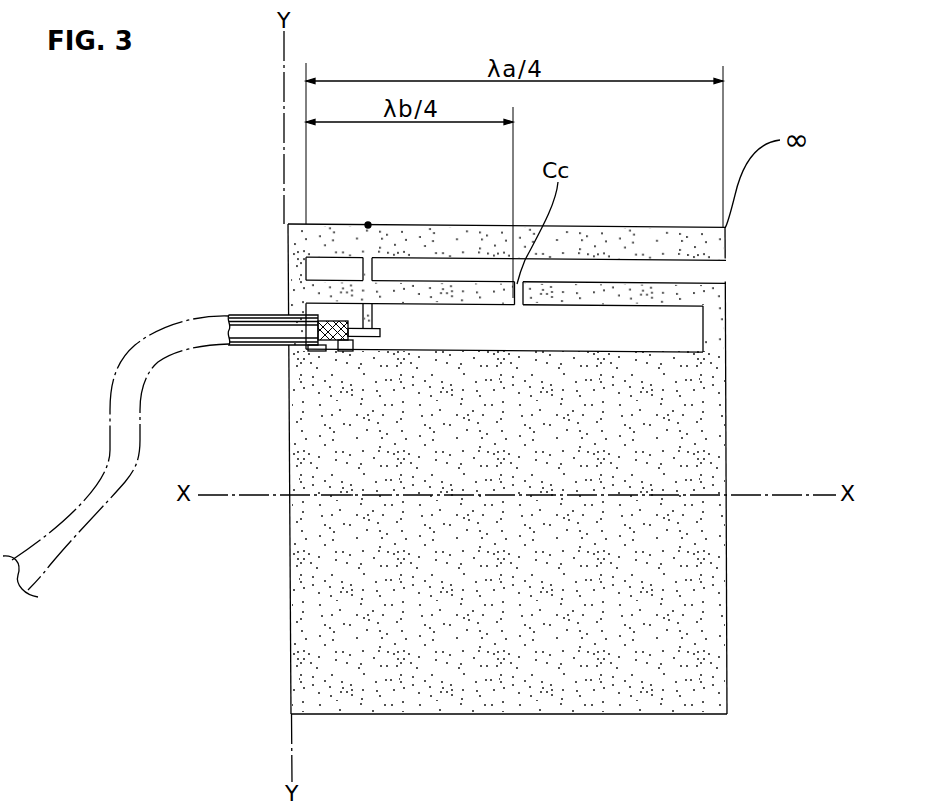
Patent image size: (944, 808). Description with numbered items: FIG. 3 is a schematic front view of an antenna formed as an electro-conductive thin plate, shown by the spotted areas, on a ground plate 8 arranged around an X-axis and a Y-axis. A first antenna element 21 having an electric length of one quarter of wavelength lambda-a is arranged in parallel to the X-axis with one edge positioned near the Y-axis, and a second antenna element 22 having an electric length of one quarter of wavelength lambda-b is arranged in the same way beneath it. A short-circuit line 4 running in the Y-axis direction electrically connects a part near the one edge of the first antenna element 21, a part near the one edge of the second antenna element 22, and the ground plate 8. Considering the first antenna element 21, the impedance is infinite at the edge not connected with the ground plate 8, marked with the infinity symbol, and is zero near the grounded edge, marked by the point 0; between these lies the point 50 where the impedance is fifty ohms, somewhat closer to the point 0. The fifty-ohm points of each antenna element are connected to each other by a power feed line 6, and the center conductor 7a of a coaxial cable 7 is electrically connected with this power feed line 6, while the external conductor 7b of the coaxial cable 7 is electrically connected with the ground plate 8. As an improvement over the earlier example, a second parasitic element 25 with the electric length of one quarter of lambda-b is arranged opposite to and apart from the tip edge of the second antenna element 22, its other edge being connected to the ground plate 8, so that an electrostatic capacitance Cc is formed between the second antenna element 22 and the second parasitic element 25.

The short-circuit line 4 is at (306, 268).
The power feed line 6 is at (372, 316).
The coaxial cable 7 is at (147, 329).
The center conductor 7a is at (353, 352).
The external conductor 7b is at (333, 321).
The ground plate 8 is at (727, 585).
The first antenna element 21 is at (700, 259).
The second antenna element 22 is at (467, 306).
The second parasitic element 25 is at (610, 306).
The point of impedance being 50 Ω 50 is at (368, 224).
The point of impedance being zero 0 is at (286, 223).